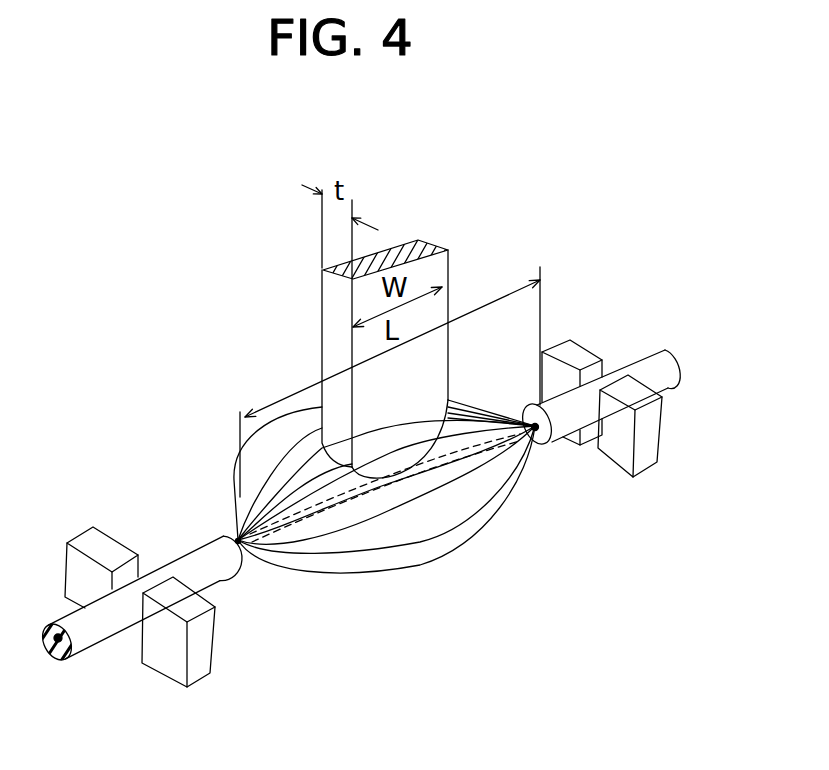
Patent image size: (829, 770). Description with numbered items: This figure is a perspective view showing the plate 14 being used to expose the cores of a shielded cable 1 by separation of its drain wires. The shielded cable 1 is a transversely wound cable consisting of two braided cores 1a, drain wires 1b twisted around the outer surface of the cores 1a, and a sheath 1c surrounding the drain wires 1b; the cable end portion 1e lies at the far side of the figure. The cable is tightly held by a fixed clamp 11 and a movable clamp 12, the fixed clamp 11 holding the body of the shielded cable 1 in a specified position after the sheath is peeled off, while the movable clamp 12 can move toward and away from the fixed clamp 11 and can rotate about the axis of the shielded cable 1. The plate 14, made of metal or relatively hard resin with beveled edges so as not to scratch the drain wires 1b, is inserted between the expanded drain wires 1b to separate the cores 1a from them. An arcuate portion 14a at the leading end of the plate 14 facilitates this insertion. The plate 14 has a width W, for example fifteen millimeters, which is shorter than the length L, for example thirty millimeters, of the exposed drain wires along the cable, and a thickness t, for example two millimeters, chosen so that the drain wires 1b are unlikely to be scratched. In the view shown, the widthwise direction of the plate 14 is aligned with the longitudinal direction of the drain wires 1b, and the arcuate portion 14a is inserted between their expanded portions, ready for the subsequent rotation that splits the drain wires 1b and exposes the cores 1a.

The shielded cable 1 is at (367, 597).
The cores 1a is at (343, 498).
The drain wires 1b is at (297, 553).
The sheath 1c is at (212, 568).
The cable end portion 1e is at (638, 362).
The fixed clamp 11 is at (90, 587).
The movable clamp 12 is at (610, 450).
The plate 14 is at (462, 280).
The arcuate portion 14a is at (388, 473).